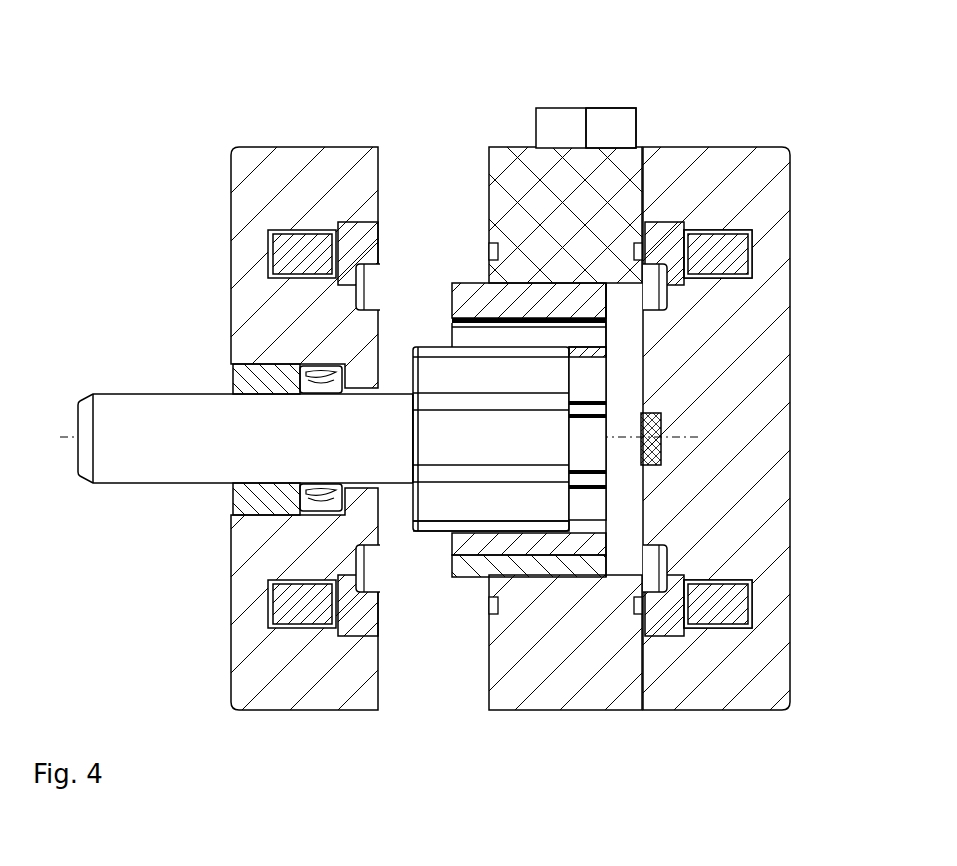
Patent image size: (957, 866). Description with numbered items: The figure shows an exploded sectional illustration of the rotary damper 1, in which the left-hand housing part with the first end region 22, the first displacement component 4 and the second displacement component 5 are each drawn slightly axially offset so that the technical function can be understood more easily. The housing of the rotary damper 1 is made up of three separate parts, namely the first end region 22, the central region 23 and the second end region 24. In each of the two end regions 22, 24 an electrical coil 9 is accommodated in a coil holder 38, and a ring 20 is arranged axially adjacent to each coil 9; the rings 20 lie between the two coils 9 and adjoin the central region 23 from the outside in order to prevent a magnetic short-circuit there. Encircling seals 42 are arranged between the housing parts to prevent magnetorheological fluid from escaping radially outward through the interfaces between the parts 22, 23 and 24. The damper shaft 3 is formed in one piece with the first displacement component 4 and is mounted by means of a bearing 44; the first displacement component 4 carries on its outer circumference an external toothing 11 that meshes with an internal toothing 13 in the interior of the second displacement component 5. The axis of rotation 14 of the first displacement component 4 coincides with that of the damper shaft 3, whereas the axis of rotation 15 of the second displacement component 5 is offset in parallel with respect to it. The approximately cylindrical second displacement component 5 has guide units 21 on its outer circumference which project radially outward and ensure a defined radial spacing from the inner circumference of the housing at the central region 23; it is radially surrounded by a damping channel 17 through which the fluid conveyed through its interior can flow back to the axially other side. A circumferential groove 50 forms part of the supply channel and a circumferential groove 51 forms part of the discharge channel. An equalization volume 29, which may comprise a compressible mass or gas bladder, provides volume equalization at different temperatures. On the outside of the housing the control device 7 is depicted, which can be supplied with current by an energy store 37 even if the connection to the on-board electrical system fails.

The rotary damper 1 is at (140, 158).
The damper shaft 3 is at (117, 407).
The first displacement component 4 is at (440, 370).
The second displacement component 5 is at (463, 300).
The control device 7 is at (552, 122).
The electrical coil 9 is at (307, 230).
The external toothing 11 is at (563, 513).
The internal toothing 13 is at (588, 338).
The axis of rotation 14 is at (403, 440).
The axis of rotation 15 is at (402, 430).
The damping channel 17 is at (484, 283).
The ring 20 is at (377, 242).
The guide unit 21 is at (555, 587).
The first end region 22 is at (248, 164).
The central region 23 is at (636, 158).
The second end region 24 is at (775, 168).
The equalization volume 29 is at (663, 441).
The energy store 37 is at (618, 122).
The coil holder 38 is at (272, 252).
The encircling seal 42 is at (636, 248).
The bearing 44 is at (257, 380).
The circumferential groove 50 is at (366, 578).
The circumferential groove 51 is at (652, 583).